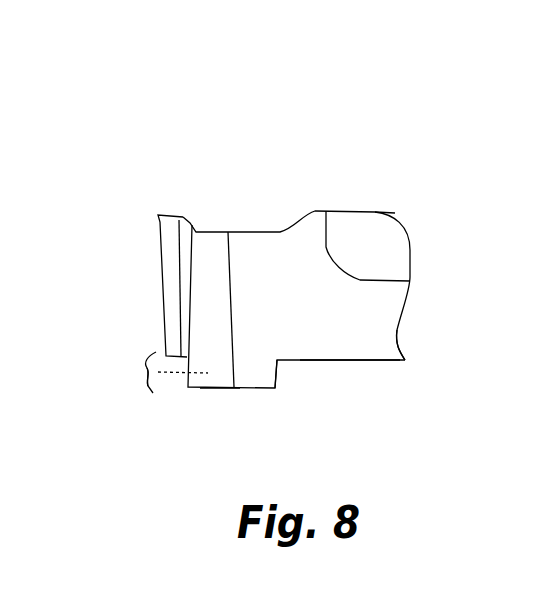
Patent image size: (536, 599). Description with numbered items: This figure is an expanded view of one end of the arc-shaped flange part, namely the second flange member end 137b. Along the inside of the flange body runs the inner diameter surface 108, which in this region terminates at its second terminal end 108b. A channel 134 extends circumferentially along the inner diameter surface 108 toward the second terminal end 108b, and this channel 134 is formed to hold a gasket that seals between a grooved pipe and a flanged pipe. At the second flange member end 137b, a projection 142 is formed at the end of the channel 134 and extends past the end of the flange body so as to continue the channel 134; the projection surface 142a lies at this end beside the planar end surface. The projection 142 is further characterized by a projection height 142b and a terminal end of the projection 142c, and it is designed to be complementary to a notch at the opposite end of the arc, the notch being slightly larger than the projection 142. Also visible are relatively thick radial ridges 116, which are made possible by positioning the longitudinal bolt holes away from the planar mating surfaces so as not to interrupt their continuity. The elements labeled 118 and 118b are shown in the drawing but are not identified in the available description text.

The housing 108 is at (192, 226).
The housing flange 108b is at (147, 330).
The slot 134 is at (198, 268).
The side wall 116 is at (372, 333).
The latch 142 is at (140, 365).
The latch arm 142a is at (277, 378).
The latch hook 142b is at (137, 375).
The latch base 142c is at (215, 392).
The bottom wall 118 is at (343, 382).
The bottom wall edge 118b is at (397, 367).
The opening 137b is at (388, 153).